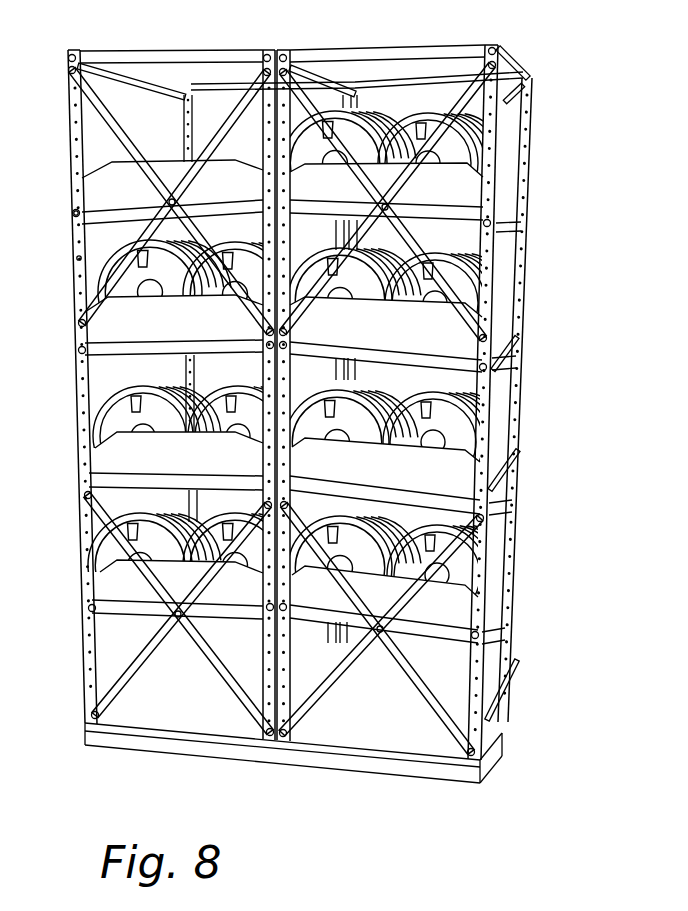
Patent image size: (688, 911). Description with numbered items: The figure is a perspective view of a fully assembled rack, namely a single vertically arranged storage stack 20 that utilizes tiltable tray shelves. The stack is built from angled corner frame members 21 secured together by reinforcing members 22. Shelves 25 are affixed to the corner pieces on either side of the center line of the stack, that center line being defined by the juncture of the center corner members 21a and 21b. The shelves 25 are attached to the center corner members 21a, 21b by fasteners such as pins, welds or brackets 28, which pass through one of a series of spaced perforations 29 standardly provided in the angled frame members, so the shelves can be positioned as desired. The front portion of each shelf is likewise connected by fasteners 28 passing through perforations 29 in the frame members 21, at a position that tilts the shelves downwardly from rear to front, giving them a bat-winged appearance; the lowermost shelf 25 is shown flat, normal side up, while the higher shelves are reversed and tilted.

The storage stack 20 is at (540, 131).
The angled corner frame member 21 is at (183, 132).
The center corner member 21a is at (262, 233).
The center corner member 21b is at (288, 238).
The reinforcing member 22 is at (110, 116).
The shelf 25 is at (105, 214).
The bracket 28 is at (73, 214).
The perforation 29 is at (73, 259).